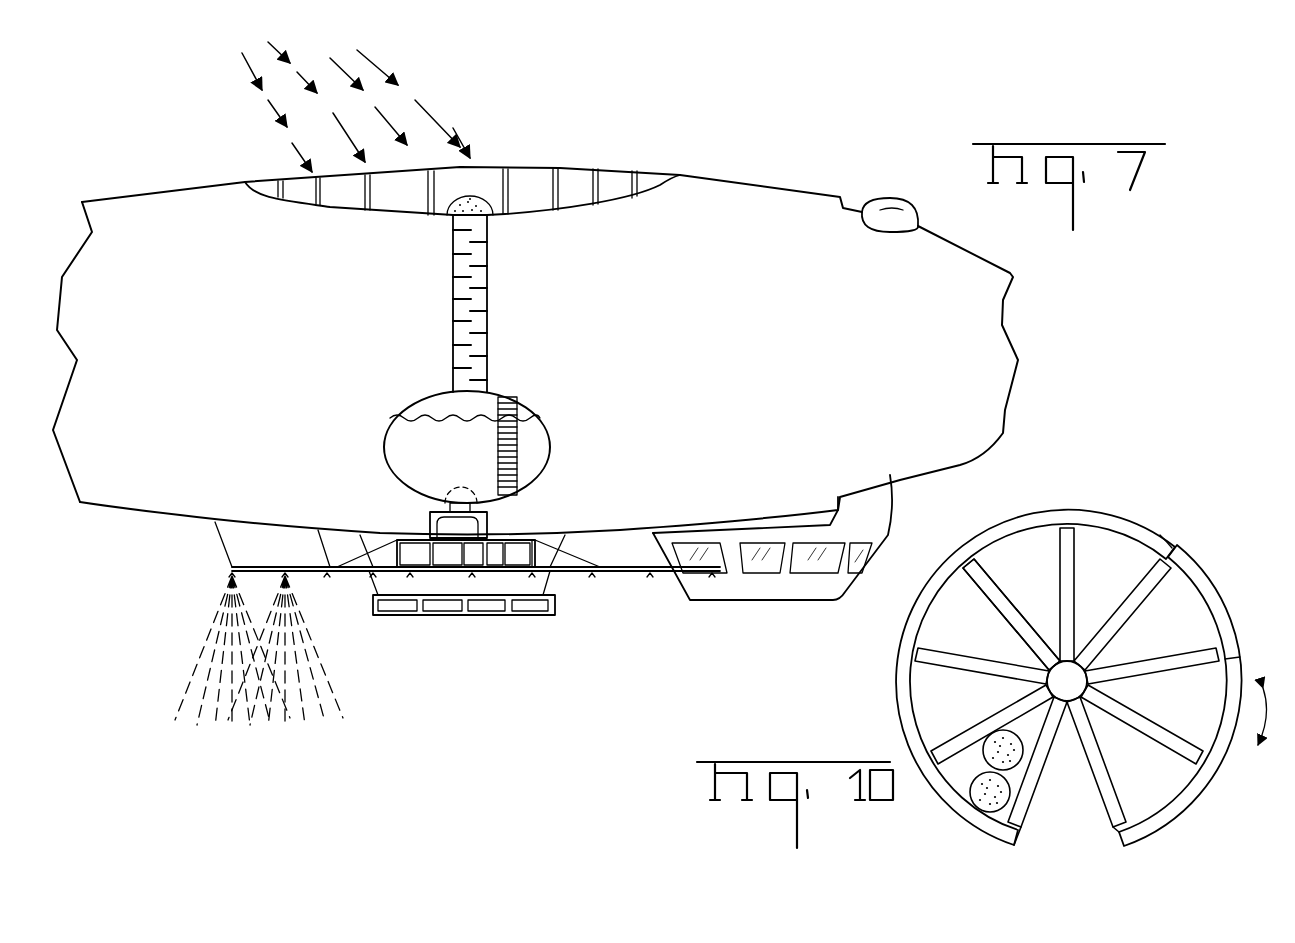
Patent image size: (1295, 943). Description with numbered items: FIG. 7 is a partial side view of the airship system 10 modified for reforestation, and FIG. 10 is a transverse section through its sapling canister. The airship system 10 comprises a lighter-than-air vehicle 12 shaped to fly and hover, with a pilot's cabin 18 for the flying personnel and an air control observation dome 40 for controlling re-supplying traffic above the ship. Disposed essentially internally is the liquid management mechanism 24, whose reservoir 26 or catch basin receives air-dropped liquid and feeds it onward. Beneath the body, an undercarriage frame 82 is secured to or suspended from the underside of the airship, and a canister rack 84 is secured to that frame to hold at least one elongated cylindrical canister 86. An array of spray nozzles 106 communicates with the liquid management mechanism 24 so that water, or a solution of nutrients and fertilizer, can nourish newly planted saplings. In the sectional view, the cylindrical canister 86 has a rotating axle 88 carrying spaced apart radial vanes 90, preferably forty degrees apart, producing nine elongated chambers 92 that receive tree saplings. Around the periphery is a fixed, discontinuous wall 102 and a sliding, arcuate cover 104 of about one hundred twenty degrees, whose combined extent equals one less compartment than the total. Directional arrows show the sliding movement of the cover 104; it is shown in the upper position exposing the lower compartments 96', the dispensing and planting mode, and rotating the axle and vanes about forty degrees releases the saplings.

In FIG. 7, the airship system 10 is at (712, 158).
In FIG. 7, the lighter-than-air vehicle 12 is at (818, 190).
In FIG. 7, the reservoir 26 is at (574, 168).
In FIG. 7, the air control observation dome 40 is at (905, 200).
In FIG. 7, the liquid management mechanism 24 is at (490, 334).
In FIG. 7, the pilot's cabin 18 is at (893, 512).
In FIG. 7, the undercarriage frame 82 is at (600, 578).
In FIG. 7, the canister rack 84 is at (556, 606).
In FIG. 7, the cylindrical canister 86 is at (450, 609).
In FIG. 10, the cylindrical canister 86 is at (1157, 532).
In FIG. 7, the spray nozzles 106 is at (318, 574).
In FIG. 10, the fixed discontinuous wall 102 is at (1098, 520).
In FIG. 10, the sliding arcuate cover 104 is at (1240, 642).
In FIG. 10, the rotating axle 88 is at (1093, 623).
In FIG. 10, the radial vanes 90 is at (988, 603).
In FIG. 10, the elongated chambers 92 is at (945, 700).
In FIG. 10, the lower compartments 96' is at (1066, 815).